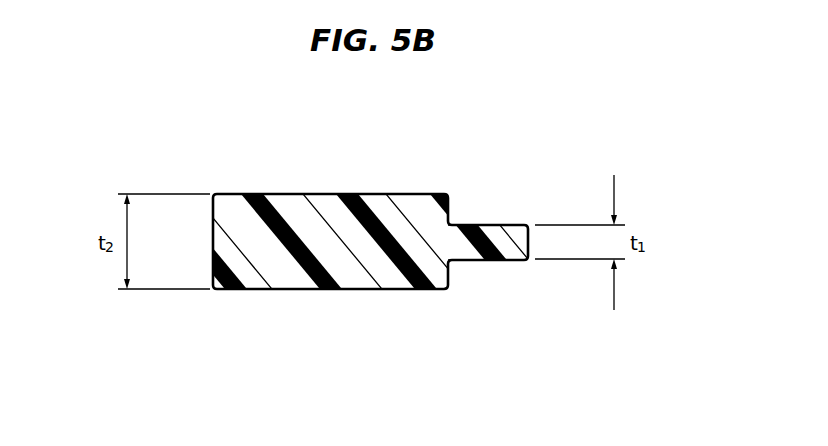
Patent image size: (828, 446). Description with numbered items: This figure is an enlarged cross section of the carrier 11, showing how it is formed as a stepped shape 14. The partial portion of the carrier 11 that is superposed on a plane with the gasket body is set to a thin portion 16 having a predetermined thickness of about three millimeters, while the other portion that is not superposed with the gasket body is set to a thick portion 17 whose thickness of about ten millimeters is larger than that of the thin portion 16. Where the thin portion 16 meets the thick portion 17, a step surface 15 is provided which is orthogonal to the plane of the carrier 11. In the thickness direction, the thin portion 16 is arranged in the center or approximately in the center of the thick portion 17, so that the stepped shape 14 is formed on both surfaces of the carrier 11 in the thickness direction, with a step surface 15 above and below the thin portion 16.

The carrier 11 is at (271, 203).
The stepped shape 14 is at (470, 207).
The step surface 15 is at (447, 207).
The thin portion 16 is at (520, 242).
The thick portion 17 is at (230, 242).